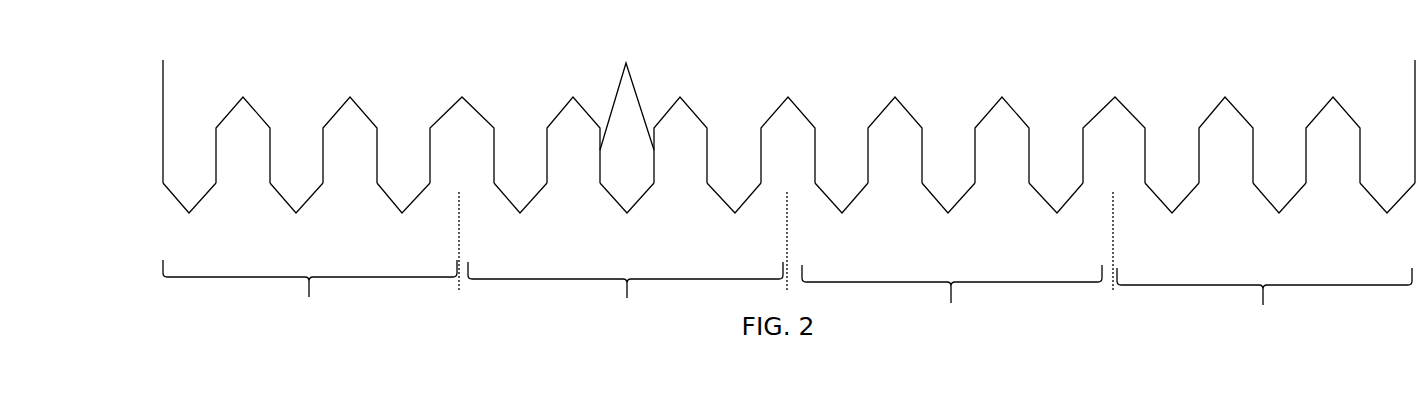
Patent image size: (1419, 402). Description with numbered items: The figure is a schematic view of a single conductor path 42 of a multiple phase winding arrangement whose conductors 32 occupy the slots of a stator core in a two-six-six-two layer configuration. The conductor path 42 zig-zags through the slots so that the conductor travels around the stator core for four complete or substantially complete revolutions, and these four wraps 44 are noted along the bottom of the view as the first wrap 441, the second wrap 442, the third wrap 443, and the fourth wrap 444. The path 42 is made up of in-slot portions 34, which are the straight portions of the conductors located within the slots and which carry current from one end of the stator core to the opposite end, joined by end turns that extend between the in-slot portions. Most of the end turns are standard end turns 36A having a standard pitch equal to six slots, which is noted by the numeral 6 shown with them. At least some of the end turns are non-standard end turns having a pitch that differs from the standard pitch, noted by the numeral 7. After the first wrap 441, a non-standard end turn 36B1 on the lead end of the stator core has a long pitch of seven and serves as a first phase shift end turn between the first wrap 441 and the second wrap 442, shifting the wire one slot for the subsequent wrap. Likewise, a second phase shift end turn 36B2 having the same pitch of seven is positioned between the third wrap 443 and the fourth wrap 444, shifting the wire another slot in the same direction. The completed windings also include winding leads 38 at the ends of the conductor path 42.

The conductor path 42 is at (217, 49).
The conductors 32 is at (162, 147).
The winding leads 38 is at (1413, 82).
The standard pitch 6 is at (788, 155).
The non-standard pitch 7 is at (787, 102).
The in-slot portions 34 is at (627, 96).
The standard end turns 36A is at (725, 192).
The first phase shift end turn 36B1 is at (482, 100).
The second phase shift end turn 36B2 is at (1085, 97).
The wraps 44 is at (787, 268).
The first wrap 441 is at (310, 280).
The second wrap 442 is at (625, 287).
The third wrap 443 is at (952, 298).
The fourth wrap 444 is at (1264, 298).